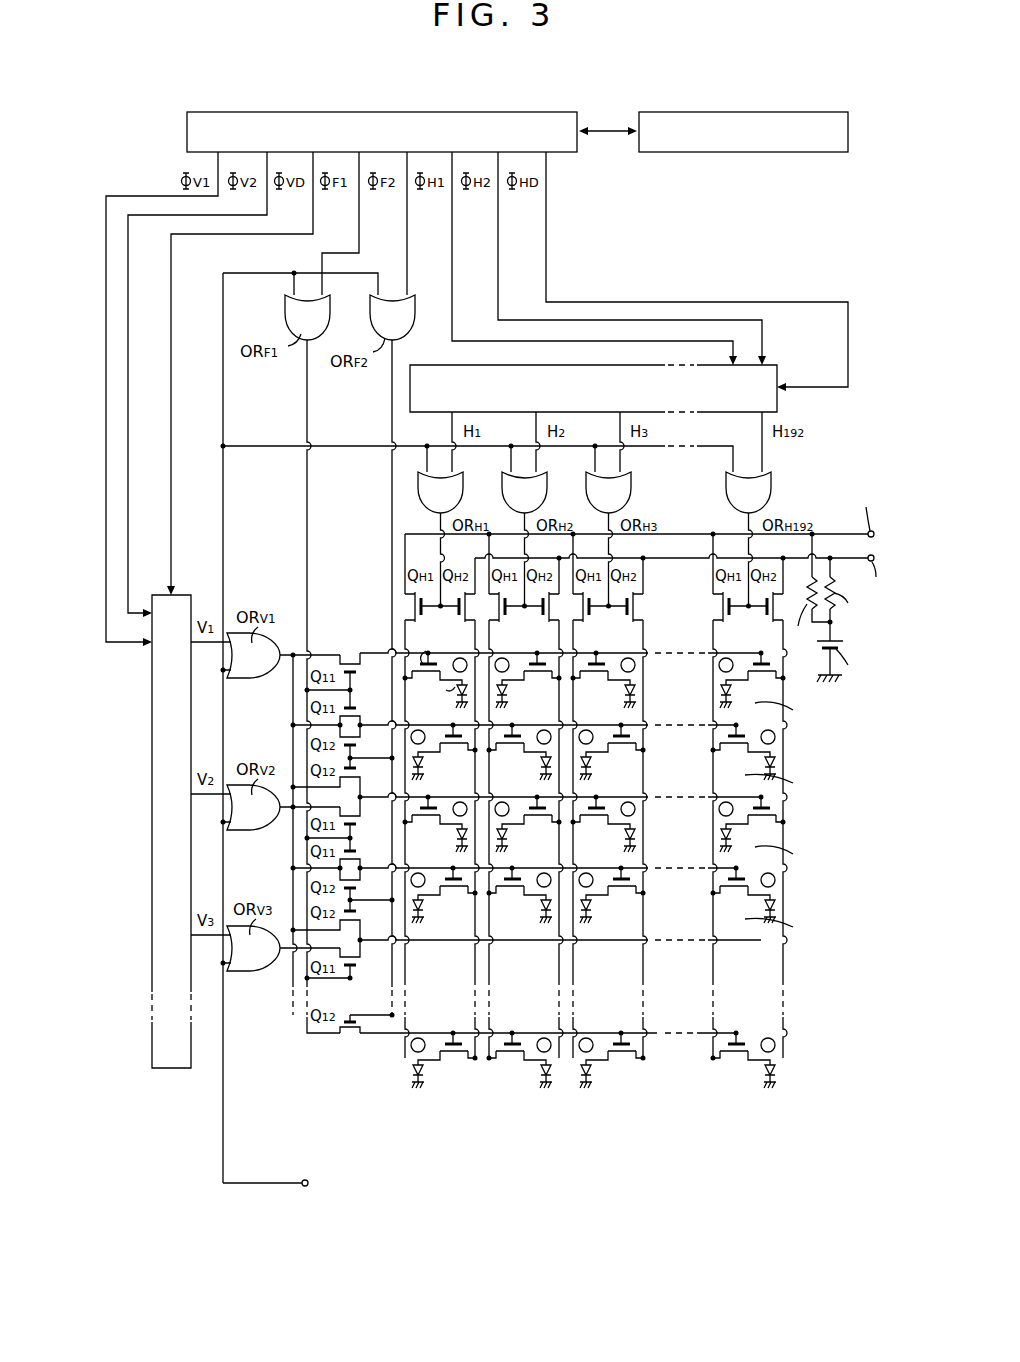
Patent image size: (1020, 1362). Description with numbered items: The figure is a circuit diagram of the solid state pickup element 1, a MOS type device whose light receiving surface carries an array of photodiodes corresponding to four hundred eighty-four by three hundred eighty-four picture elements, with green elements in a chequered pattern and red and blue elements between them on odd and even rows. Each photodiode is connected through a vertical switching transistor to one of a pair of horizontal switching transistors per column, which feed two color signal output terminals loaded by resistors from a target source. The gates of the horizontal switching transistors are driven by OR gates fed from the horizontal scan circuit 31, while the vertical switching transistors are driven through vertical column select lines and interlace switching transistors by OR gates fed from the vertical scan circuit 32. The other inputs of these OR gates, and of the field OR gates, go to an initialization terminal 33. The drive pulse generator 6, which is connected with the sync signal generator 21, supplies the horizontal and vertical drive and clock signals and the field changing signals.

The solid state pickup element 1 is at (520, 1132).
The drive pulse generator 6 is at (565, 141).
The sync signal generator 21 is at (748, 152).
The horizontal scan circuit 31 is at (778, 374).
The vertical scan circuit 32 is at (152, 775).
The initialization terminal 33 is at (309, 1183).